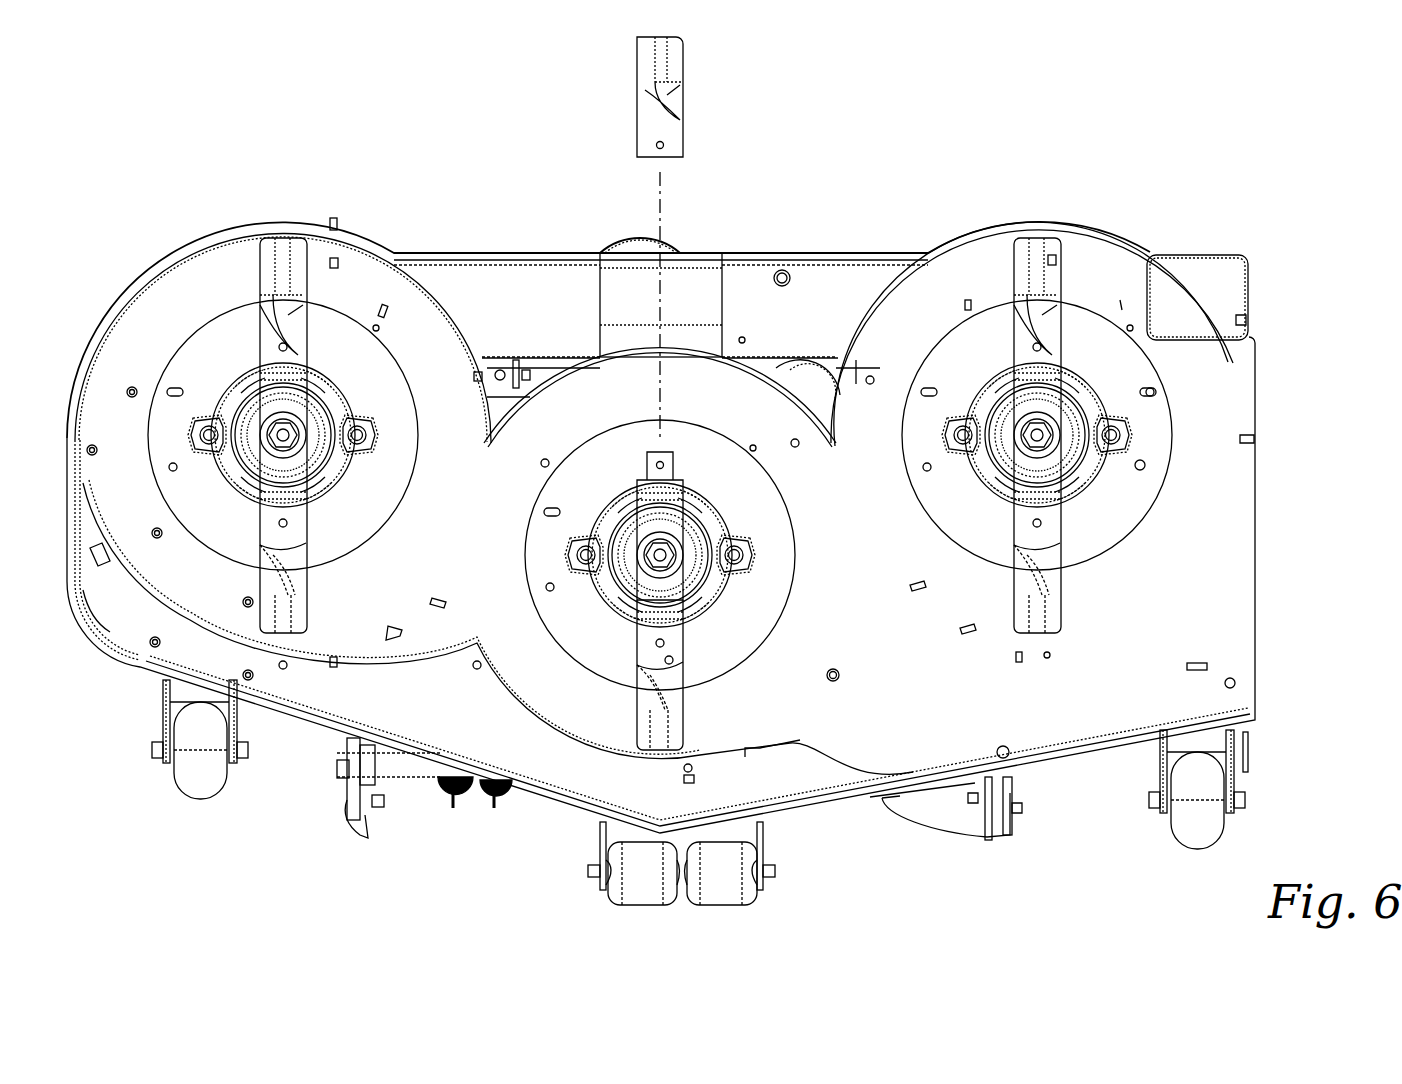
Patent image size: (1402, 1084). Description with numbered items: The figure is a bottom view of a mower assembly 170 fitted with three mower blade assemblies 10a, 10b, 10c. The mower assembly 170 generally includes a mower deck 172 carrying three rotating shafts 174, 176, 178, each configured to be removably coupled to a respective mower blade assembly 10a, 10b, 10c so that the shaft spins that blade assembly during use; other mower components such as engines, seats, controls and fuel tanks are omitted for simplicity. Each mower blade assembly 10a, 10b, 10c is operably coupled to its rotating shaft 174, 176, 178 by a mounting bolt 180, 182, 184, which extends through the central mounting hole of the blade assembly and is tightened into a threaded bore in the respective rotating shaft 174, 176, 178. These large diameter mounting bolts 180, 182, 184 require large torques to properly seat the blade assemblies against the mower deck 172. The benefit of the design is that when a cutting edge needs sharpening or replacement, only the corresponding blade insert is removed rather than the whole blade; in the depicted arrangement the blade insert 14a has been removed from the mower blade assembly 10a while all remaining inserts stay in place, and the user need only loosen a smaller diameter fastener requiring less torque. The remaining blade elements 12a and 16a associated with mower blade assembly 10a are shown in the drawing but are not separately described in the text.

The mower assembly 170 is at (655, 497).
The mower deck 172 is at (661, 502).
The mower blade assembly 10a is at (632, 574).
The mower blade assembly 10b is at (256, 435).
The mower blade assembly 10c is at (1018, 435).
The blade 12a is at (651, 497).
The blade insert 14a is at (678, 125).
The blade end portion 16a is at (650, 718).
The rotating shaft 174 is at (655, 563).
The rotating shaft 176 is at (278, 444).
The rotating shaft 178 is at (1050, 426).
The mounting bolt 180 is at (665, 563).
The mounting bolt 182 is at (291, 441).
The mounting bolt 184 is at (1044, 443).